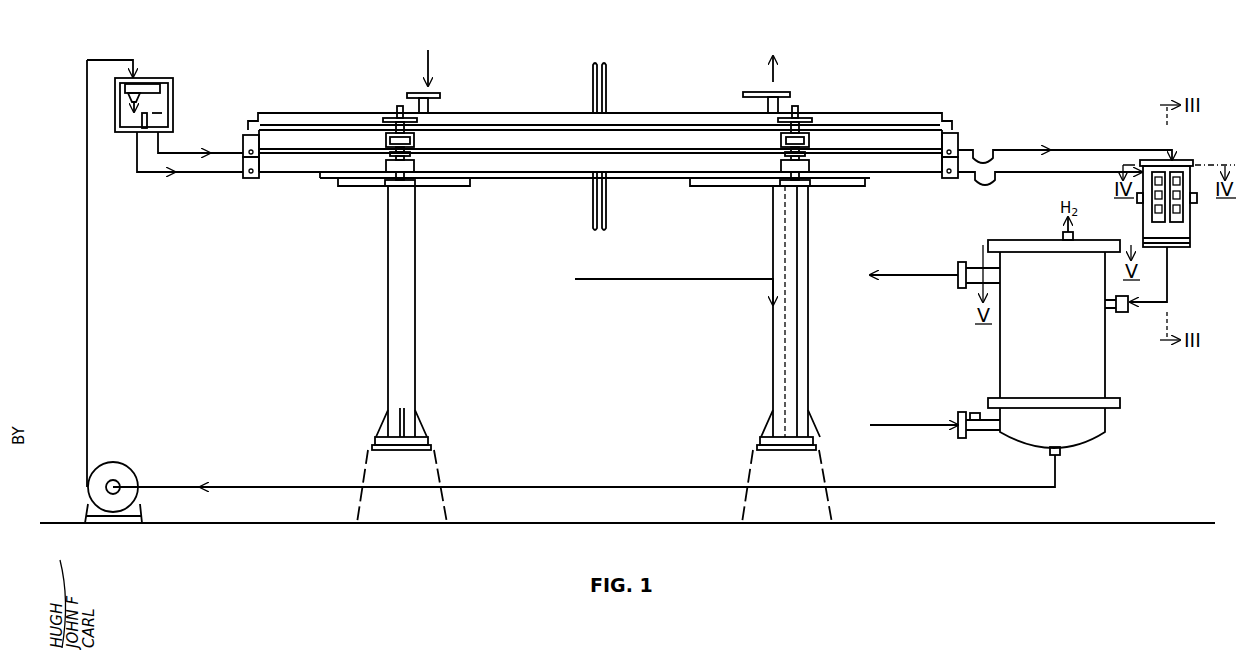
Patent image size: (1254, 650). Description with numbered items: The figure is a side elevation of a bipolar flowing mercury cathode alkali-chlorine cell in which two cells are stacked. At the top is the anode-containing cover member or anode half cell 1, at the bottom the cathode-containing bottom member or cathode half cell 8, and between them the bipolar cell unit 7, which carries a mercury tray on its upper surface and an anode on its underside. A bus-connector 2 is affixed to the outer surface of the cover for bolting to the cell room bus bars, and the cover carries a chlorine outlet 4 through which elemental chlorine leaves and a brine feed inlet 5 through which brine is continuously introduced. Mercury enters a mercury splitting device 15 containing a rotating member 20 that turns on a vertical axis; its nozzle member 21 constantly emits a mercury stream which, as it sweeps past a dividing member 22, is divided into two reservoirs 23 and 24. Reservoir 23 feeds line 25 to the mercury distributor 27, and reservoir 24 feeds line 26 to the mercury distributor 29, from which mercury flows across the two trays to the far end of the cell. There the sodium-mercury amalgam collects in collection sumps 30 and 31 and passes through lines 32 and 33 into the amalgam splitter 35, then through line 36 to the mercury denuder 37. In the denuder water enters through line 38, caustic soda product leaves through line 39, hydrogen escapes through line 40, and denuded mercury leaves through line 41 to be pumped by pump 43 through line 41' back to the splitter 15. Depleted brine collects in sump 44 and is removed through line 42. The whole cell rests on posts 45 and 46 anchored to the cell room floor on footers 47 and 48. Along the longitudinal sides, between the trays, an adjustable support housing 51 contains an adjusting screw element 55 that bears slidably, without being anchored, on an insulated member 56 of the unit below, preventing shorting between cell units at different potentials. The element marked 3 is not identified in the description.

The anode half cell 1 is at (916, 112).
The bus-connector 2 is at (646, 108).
The cathode lead tubes 3 is at (592, 213).
The chlorine outlet 4 is at (743, 95).
The brine feed inlet 5 is at (407, 95).
The bipolar cell unit 7 is at (600, 150).
The cathode half cell 8 is at (905, 178).
The mercury splitting device 15 is at (173, 107).
The rotating member 20 is at (146, 84).
The nozzle member 21 is at (124, 96).
The dividing member 22 is at (141, 119).
The reservoir 23 is at (163, 113).
The reservoir 24 is at (126, 113).
The line 25 is at (172, 153).
The line 26 is at (145, 176).
The mercury distributor 27 is at (243, 133).
The mercury distributor 29 is at (245, 180).
The collection sump 30 is at (958, 146).
The collection sump 31 is at (946, 180).
The line 32 is at (1025, 146).
The line 33 is at (1005, 183).
The amalgam splitter 35 is at (1192, 228).
The line 36 is at (1168, 270).
The mercury denuder 37 is at (1062, 359).
The line 38 is at (972, 440).
The line 39 is at (968, 262).
The line 40 is at (1062, 237).
The line 41 is at (606, 471).
The line 41' is at (109, 273).
The line 42 is at (773, 252).
The pump 43 is at (112, 462).
The sump 44 is at (718, 188).
The post 45 is at (388, 332).
The post 46 is at (773, 353).
The footer 47 is at (362, 472).
The footer 48 is at (760, 470).
The housing 51 is at (809, 140).
The adjusting screw element 55 is at (781, 140).
The insulated member 56 is at (802, 132).